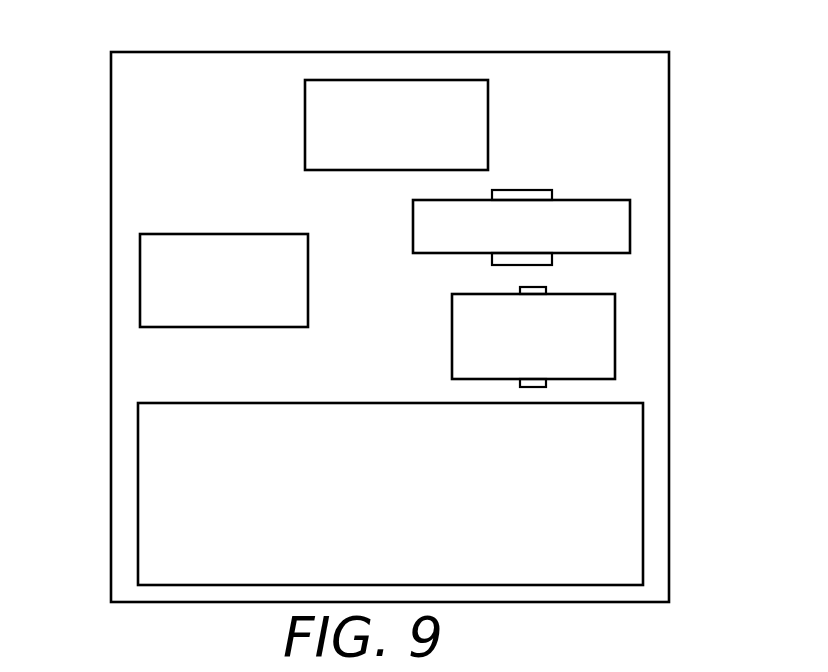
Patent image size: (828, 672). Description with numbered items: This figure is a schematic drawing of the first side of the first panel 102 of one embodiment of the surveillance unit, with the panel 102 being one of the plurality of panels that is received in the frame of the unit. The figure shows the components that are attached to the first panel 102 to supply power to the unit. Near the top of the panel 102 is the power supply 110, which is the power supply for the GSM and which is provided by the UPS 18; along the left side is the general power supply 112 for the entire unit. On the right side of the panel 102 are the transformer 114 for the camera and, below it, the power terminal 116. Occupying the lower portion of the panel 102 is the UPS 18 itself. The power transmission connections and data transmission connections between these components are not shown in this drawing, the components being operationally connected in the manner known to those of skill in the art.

The first panel 102 is at (512, 73).
The power supply 110 is at (318, 153).
The general power supply 112 is at (153, 287).
The transformer 114 is at (620, 231).
The power terminal 116 is at (578, 347).
The UPS 18 is at (154, 503).